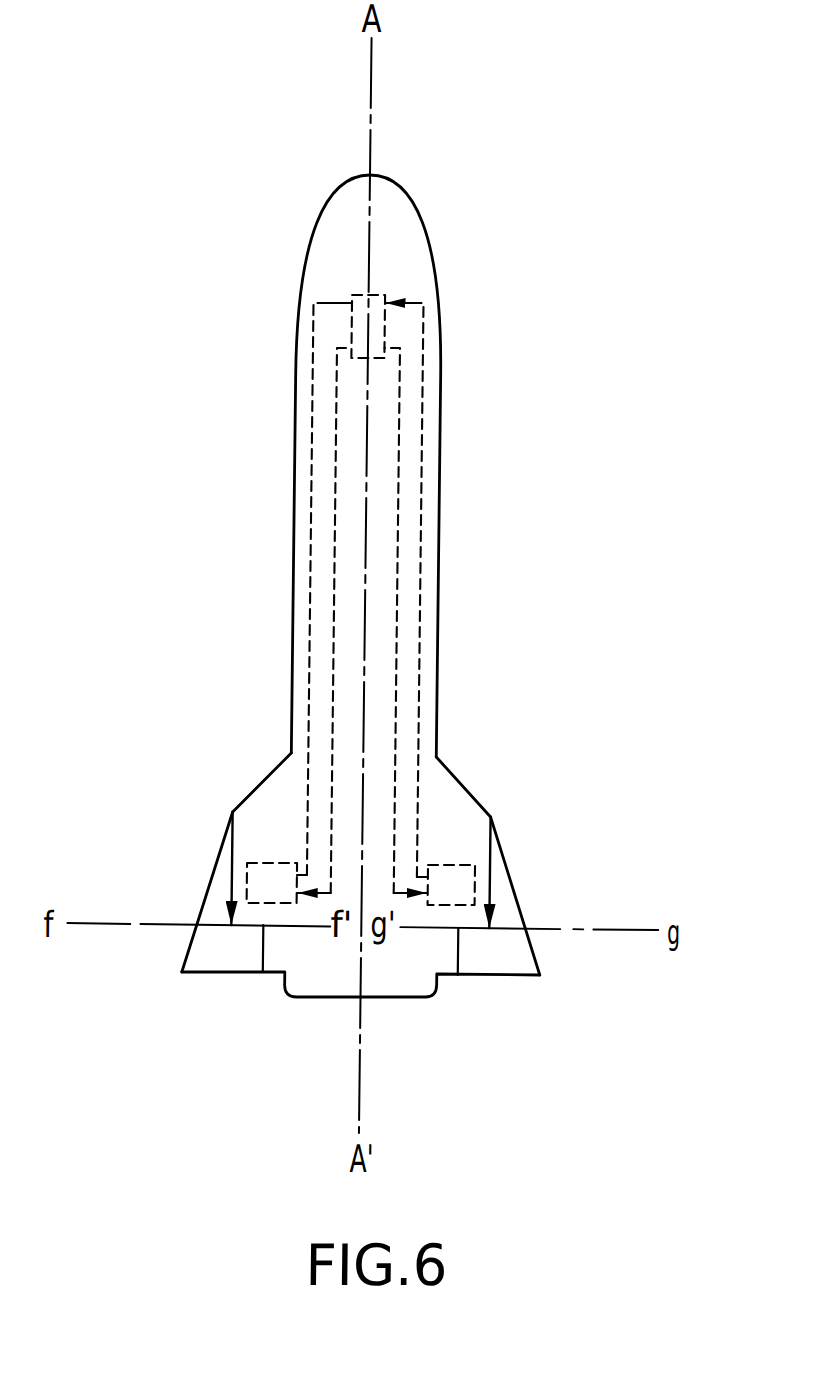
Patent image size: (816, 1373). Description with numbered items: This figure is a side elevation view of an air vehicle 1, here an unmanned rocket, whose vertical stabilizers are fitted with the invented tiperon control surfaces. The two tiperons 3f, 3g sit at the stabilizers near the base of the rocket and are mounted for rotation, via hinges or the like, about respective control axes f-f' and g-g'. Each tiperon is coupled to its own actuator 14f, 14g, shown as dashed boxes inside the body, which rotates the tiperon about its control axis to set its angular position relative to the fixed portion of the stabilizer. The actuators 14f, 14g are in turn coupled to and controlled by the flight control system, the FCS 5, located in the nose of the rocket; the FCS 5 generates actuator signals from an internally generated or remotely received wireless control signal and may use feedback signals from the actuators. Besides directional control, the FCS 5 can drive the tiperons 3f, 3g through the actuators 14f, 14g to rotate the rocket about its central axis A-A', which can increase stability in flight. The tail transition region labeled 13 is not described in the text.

The air vehicle 1 is at (507, 230).
The FCS 5 is at (363, 293).
The tail transition section 13 is at (267, 775).
The tiperon 3f is at (200, 860).
The tiperon 3g is at (525, 862).
The actuator 14f is at (280, 863).
The actuator 14g is at (460, 865).